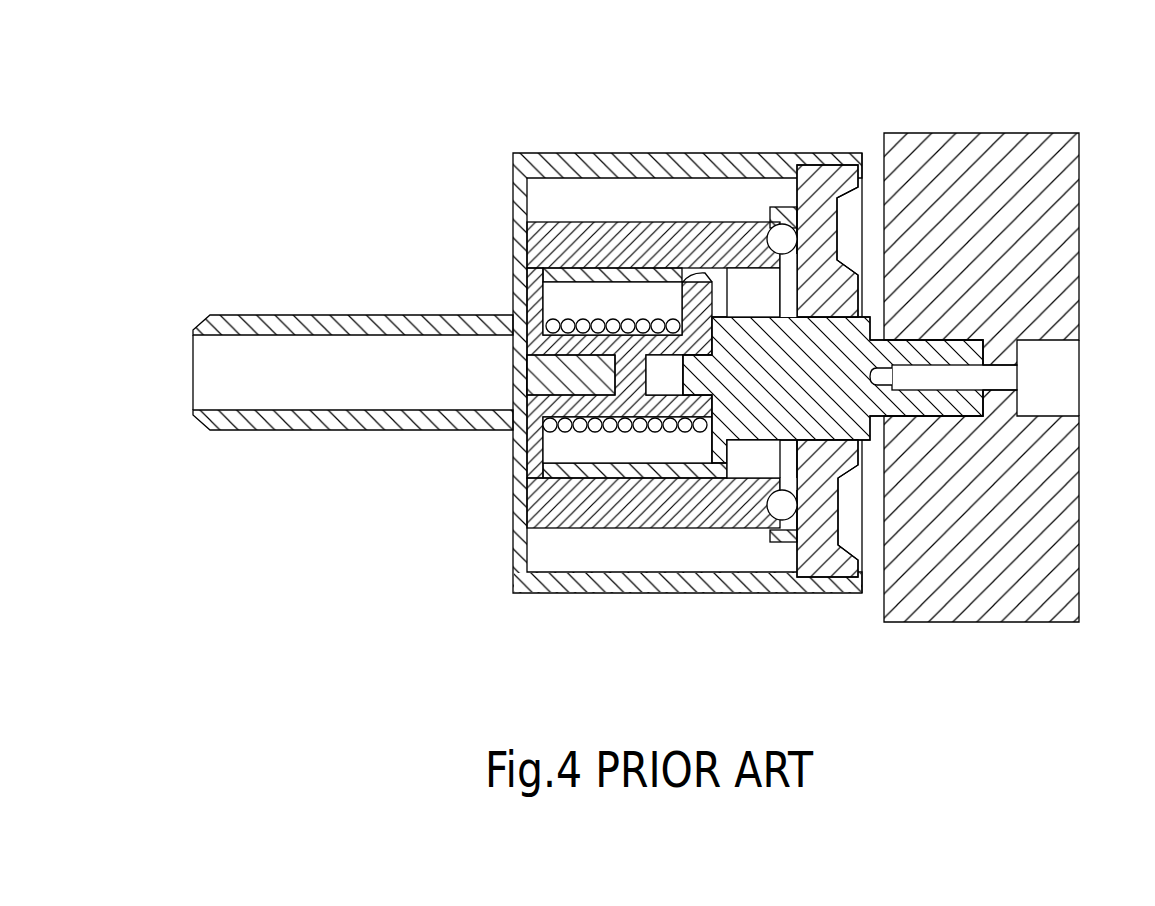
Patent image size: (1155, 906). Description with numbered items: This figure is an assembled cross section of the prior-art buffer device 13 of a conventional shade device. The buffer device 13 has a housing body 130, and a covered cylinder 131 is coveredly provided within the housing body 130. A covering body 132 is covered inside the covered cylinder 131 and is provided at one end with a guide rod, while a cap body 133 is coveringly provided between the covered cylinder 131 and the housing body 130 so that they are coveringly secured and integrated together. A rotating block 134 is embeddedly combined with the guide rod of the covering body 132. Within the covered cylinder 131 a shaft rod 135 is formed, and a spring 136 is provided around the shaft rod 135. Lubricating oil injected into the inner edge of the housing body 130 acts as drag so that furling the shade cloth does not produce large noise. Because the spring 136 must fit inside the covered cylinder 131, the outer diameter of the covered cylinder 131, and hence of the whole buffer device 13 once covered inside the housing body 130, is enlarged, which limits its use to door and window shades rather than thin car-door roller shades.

The buffer device 13 is at (671, 306).
The housing body 130 is at (603, 154).
The covered cylinder 131 is at (632, 228).
The covering body 132 is at (783, 338).
The cap body 133 is at (838, 172).
The rotating block 134 is at (1068, 202).
The shaft rod 135 is at (567, 407).
The spring 136 is at (553, 322).